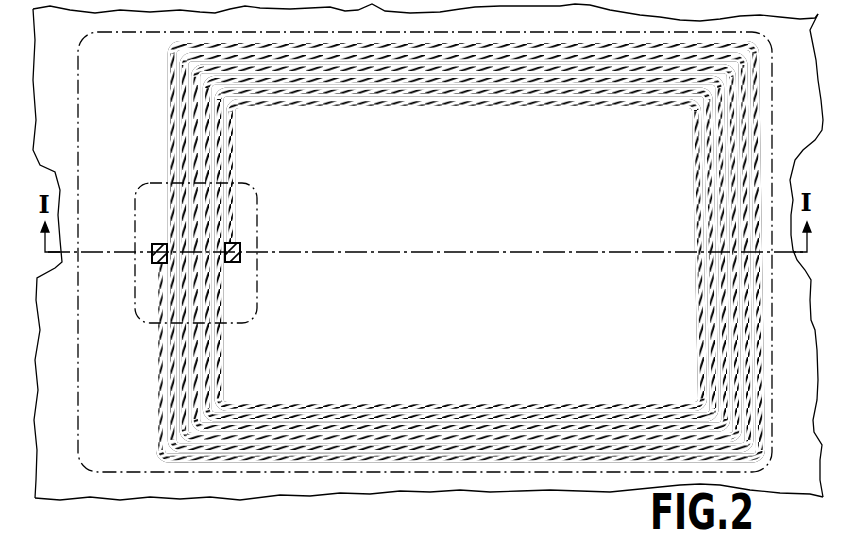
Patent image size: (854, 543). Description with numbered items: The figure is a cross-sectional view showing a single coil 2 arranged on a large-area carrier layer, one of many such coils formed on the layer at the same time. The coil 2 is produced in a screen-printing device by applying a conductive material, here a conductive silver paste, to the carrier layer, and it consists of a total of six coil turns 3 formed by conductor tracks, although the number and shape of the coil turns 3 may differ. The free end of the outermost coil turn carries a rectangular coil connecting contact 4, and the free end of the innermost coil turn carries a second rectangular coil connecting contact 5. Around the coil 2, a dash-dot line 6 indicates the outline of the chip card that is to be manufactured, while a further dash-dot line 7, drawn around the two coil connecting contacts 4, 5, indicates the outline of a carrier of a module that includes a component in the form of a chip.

The coil 2 is at (438, 245).
The coil turns 3 is at (172, 83).
The coil connecting contact 4 is at (155, 246).
The coil connecting contact 5 is at (240, 250).
The dash-dot line 6 is at (78, 388).
The further dash-dot line 7 is at (136, 262).